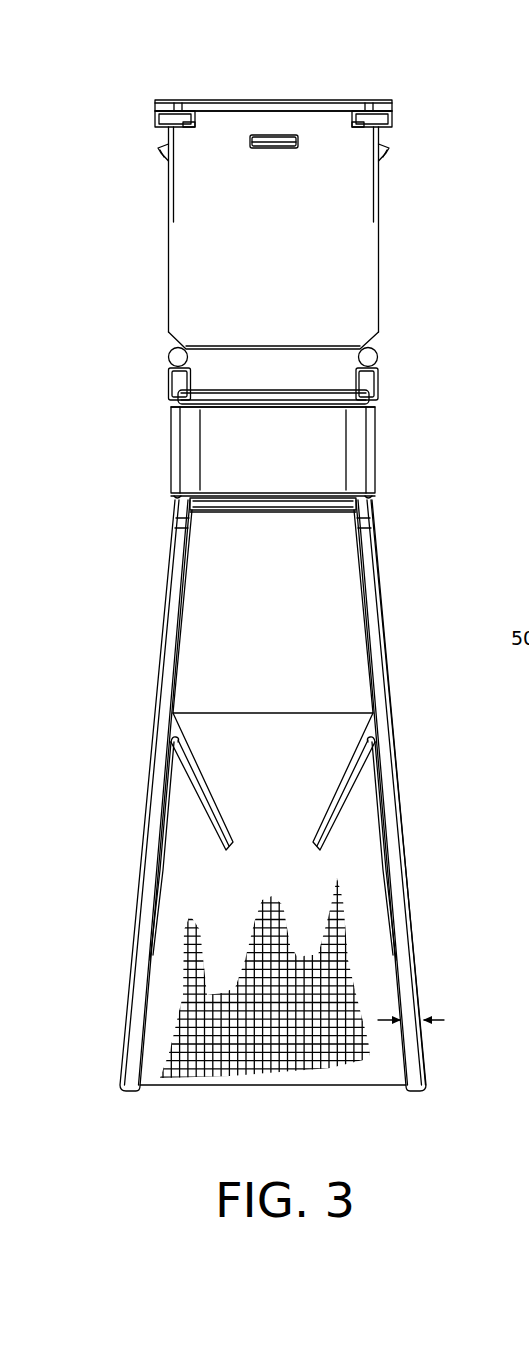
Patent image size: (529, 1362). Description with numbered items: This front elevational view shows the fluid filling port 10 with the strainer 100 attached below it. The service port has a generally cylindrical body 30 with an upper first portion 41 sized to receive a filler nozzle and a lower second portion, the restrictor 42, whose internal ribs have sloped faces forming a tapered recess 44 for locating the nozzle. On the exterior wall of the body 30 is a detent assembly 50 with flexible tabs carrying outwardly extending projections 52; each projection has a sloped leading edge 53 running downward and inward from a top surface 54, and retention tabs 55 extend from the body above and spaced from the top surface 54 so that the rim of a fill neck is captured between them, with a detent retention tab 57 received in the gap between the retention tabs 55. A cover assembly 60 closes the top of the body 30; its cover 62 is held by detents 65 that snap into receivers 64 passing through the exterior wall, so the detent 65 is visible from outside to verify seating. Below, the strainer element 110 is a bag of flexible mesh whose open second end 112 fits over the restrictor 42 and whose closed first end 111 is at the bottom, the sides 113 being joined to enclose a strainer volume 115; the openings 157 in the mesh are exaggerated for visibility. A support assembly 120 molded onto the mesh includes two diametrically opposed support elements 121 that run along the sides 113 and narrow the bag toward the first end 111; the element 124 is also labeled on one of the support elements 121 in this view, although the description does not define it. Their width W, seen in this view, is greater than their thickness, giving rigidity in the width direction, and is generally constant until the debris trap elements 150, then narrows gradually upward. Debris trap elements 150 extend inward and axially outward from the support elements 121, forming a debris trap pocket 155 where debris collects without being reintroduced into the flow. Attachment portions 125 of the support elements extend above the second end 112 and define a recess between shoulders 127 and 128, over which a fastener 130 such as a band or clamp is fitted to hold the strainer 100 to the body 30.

The fluid filling port 10 is at (112, 100).
The body 30 is at (349, 260).
The first portion 41 is at (193, 245).
The restrictor 42 is at (212, 373).
The tapered recess 44 is at (171, 340).
The detent assembly 50 is at (401, 152).
The projections 52 is at (158, 153).
The sloped leading edge 53 is at (163, 167).
The top surface 54 is at (168, 145).
The retention tabs 55 is at (155, 111).
The detent retention tab 57 is at (152, 118).
The cover assembly 60 is at (334, 108).
The cover 62 is at (377, 363).
The receivers 64 is at (268, 134).
The detent 65 is at (279, 150).
The strainer 100 is at (400, 509).
The strainer element 110 is at (212, 625).
The first end 111 is at (340, 1085).
The second end 112 is at (317, 398).
The sides 113 is at (150, 938).
The strainer volume 115 is at (289, 681).
The support assembly 120 is at (151, 718).
The support elements 121 is at (158, 783).
The leg outer wall 124 is at (370, 970).
The attachment portions 125 is at (167, 503).
The shoulder 127 is at (168, 400).
The shoulder 128 is at (176, 496).
The fastener 130 is at (341, 448).
The debris trap elements 150 is at (334, 797).
The debris trap pocket 155 is at (181, 800).
The openings 157 is at (234, 1046).
The width W is at (436, 1018).